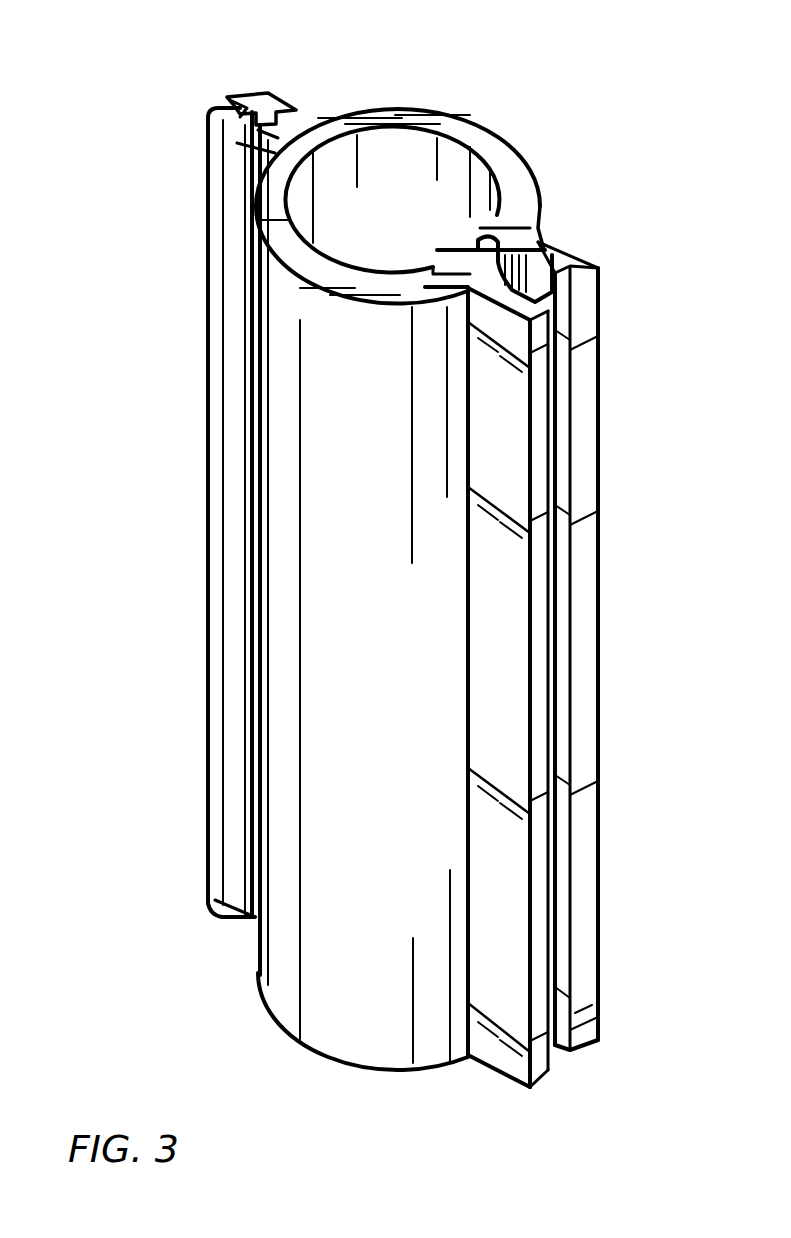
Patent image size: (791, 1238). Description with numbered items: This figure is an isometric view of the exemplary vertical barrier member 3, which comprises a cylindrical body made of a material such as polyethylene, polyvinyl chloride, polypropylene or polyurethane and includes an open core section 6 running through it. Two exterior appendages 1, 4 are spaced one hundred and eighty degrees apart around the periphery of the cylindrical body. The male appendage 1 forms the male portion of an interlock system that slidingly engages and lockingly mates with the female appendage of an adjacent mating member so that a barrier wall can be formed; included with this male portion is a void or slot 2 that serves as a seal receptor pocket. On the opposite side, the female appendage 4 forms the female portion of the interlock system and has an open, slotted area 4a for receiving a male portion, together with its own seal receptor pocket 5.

The male appendage 1 is at (268, 93).
The slot 2 is at (226, 106).
The barrier member 3 is at (383, 103).
The female appendage 4 is at (582, 258).
The slotted area 4a is at (540, 243).
The seal receptor pocket 5 is at (495, 257).
The open core section 6 is at (413, 177).